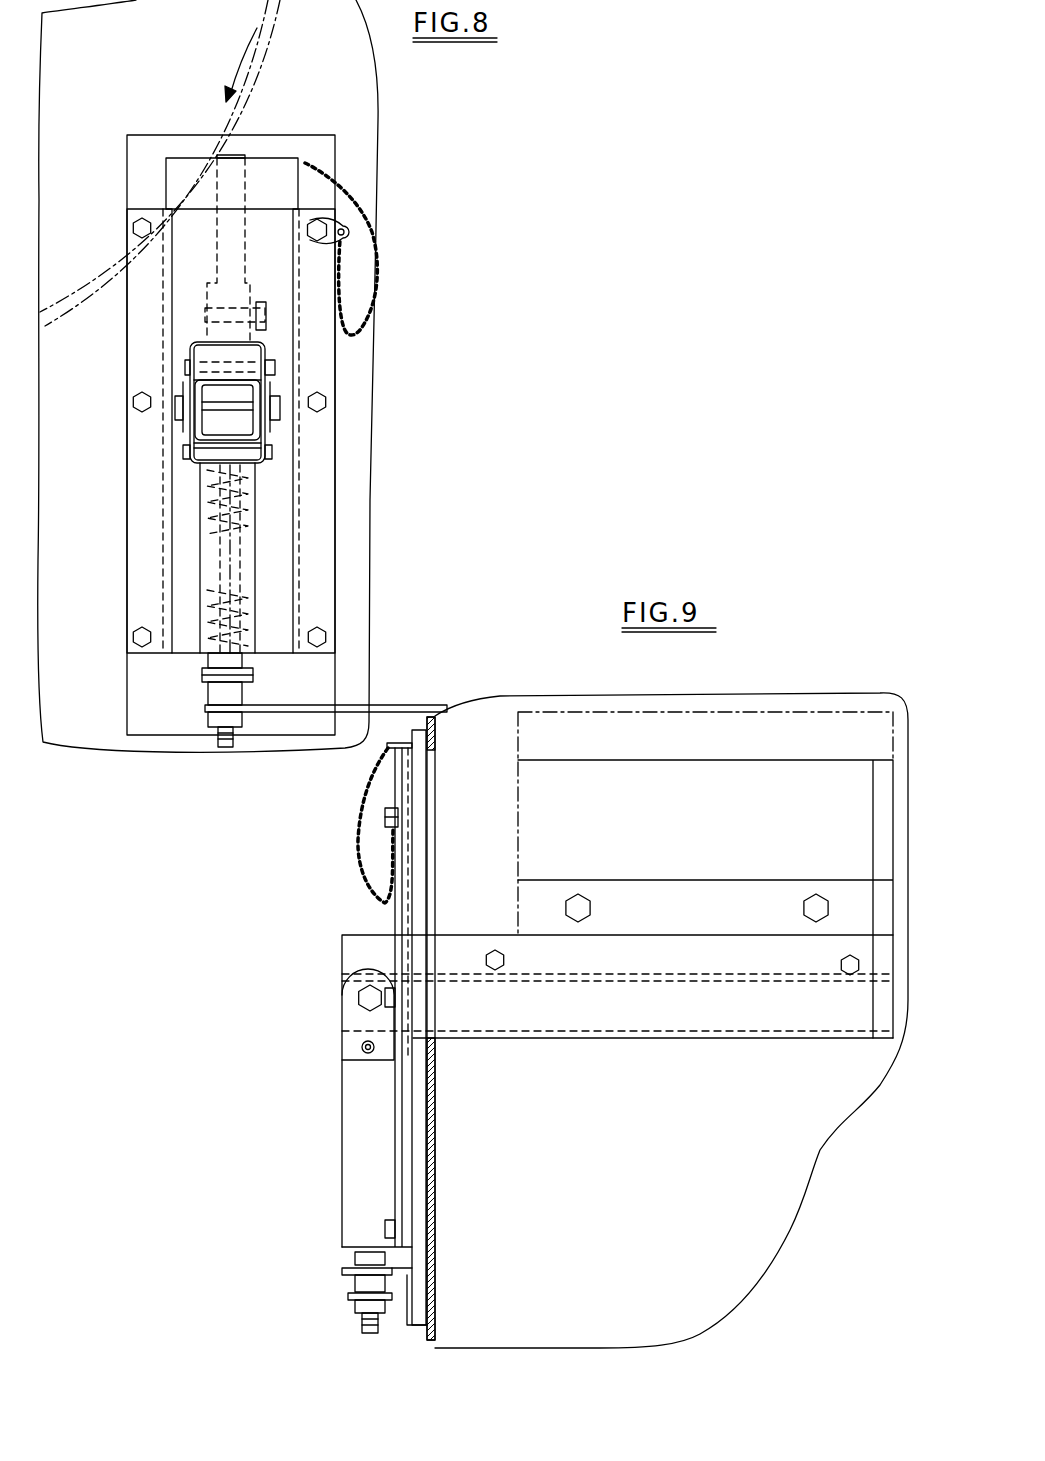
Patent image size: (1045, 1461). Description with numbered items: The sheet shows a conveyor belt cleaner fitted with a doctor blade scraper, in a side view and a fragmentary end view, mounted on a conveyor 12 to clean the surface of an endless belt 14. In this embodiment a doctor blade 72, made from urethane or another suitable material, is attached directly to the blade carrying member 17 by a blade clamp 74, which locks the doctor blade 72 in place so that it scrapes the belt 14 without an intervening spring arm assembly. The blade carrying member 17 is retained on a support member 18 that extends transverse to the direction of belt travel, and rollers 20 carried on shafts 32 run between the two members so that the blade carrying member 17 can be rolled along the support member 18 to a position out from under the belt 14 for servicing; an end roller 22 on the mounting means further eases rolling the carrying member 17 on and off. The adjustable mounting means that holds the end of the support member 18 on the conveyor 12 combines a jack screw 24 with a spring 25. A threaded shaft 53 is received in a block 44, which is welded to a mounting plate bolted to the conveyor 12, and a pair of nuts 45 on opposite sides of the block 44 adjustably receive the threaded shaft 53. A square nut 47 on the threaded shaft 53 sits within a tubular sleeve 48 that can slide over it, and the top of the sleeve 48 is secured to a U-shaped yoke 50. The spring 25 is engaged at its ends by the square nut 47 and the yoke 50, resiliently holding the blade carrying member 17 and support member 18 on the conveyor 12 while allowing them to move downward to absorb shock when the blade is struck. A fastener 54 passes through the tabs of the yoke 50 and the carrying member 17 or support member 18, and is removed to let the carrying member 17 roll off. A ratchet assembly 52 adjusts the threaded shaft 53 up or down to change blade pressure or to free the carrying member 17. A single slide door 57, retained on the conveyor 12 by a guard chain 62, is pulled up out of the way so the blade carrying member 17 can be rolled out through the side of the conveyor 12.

In FIG. 8, the conveyor 12 is at (375, 345).
In FIG. 9, the conveyor 12 is at (436, 1166).
In FIG. 8, the endless belt 14 is at (73, 312).
In FIG. 9, the endless belt 14 is at (785, 735).
In FIG. 8, the blade carrying member 17 is at (268, 352).
In FIG. 9, the blade carrying member 17 is at (512, 950).
In FIG. 8, the support member 18 is at (253, 390).
In FIG. 9, the support member 18 is at (578, 978).
In FIG. 8, the rollers 20 is at (208, 353).
In FIG. 8, the end roller 22 is at (255, 452).
In FIG. 9, the end roller 22 is at (388, 1062).
In FIG. 8, the jack screw 24 is at (215, 588).
In FIG. 8, the spring 25 is at (398, 597).
In FIG. 8, the shaft 32 is at (178, 398).
In FIG. 8, the block 44 is at (201, 678).
In FIG. 9, the block 44 is at (408, 1273).
In FIG. 8, the nuts 45 is at (246, 660).
In FIG. 9, the nuts 45 is at (352, 1283).
In FIG. 8, the square nut 47 is at (196, 655).
In FIG. 8, the tubular sleeve 48 is at (258, 536).
In FIG. 9, the tubular sleeve 48 is at (343, 1204).
In FIG. 8, the U-shaped yoke 50 is at (263, 440).
In FIG. 9, the U-shaped yoke 50 is at (348, 1015).
In FIG. 8, the ratchet assembly 52 is at (400, 705).
In FIG. 9, the ratchet assembly 52 is at (348, 1297).
In FIG. 8, the threaded shaft 53 is at (232, 748).
In FIG. 9, the threaded shaft 53 is at (362, 1327).
In FIG. 9, the fastener 54 is at (358, 998).
In FIG. 8, the slide door 57 is at (267, 160).
In FIG. 9, the slide door 57 is at (398, 788).
In FIG. 8, the guard chain 62 is at (349, 231).
In FIG. 9, the guard chain 62 is at (362, 873).
In FIG. 8, the doctor blade 72 is at (241, 236).
In FIG. 9, the doctor blade 72 is at (590, 718).
In FIG. 8, the blade clamp 74 is at (249, 305).
In FIG. 9, the blade clamp 74 is at (686, 888).